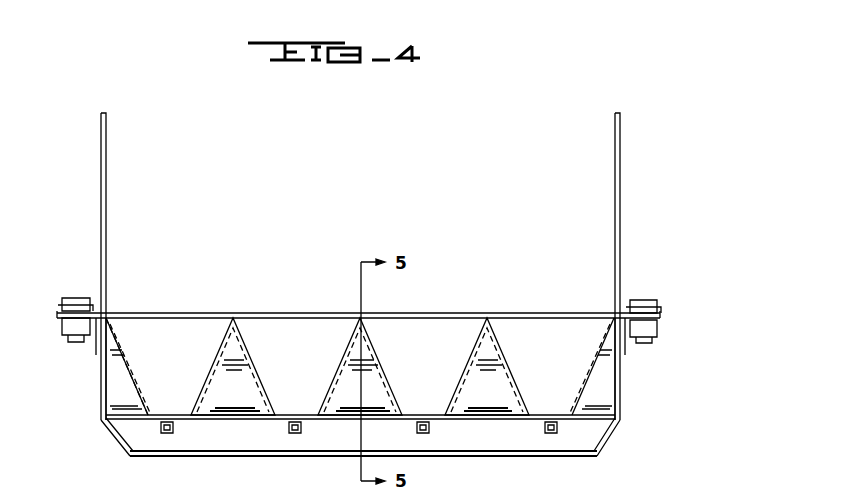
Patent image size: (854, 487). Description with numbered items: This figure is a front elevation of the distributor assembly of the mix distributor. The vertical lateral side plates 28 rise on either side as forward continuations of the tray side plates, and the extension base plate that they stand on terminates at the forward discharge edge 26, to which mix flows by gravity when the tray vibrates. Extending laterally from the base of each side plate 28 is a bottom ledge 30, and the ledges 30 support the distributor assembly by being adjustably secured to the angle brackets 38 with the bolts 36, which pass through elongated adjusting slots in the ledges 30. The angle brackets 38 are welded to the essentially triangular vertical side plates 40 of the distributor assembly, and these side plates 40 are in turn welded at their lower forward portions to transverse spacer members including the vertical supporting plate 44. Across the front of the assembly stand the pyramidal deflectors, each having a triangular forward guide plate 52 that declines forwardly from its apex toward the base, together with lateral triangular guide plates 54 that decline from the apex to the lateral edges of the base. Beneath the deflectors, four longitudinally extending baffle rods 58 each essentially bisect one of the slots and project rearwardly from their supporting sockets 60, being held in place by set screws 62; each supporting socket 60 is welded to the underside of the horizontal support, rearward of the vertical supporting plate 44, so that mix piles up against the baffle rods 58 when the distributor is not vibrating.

The forward discharge edge 26 is at (303, 312).
The lateral side plate 28 is at (106, 212).
The bottom ledge 30 is at (64, 304).
The bolt 36 is at (86, 298).
The angle bracket 38 is at (96, 344).
The vertical side plate 40 is at (101, 408).
The vertical supporting plate 44 is at (250, 456).
The triangular forward guide plate 52 is at (244, 395).
The lateral triangular guide plate 54 is at (134, 376).
The baffle rod 58 is at (175, 427).
The supporting socket 60 is at (161, 432).
The set screw 62 is at (170, 434).